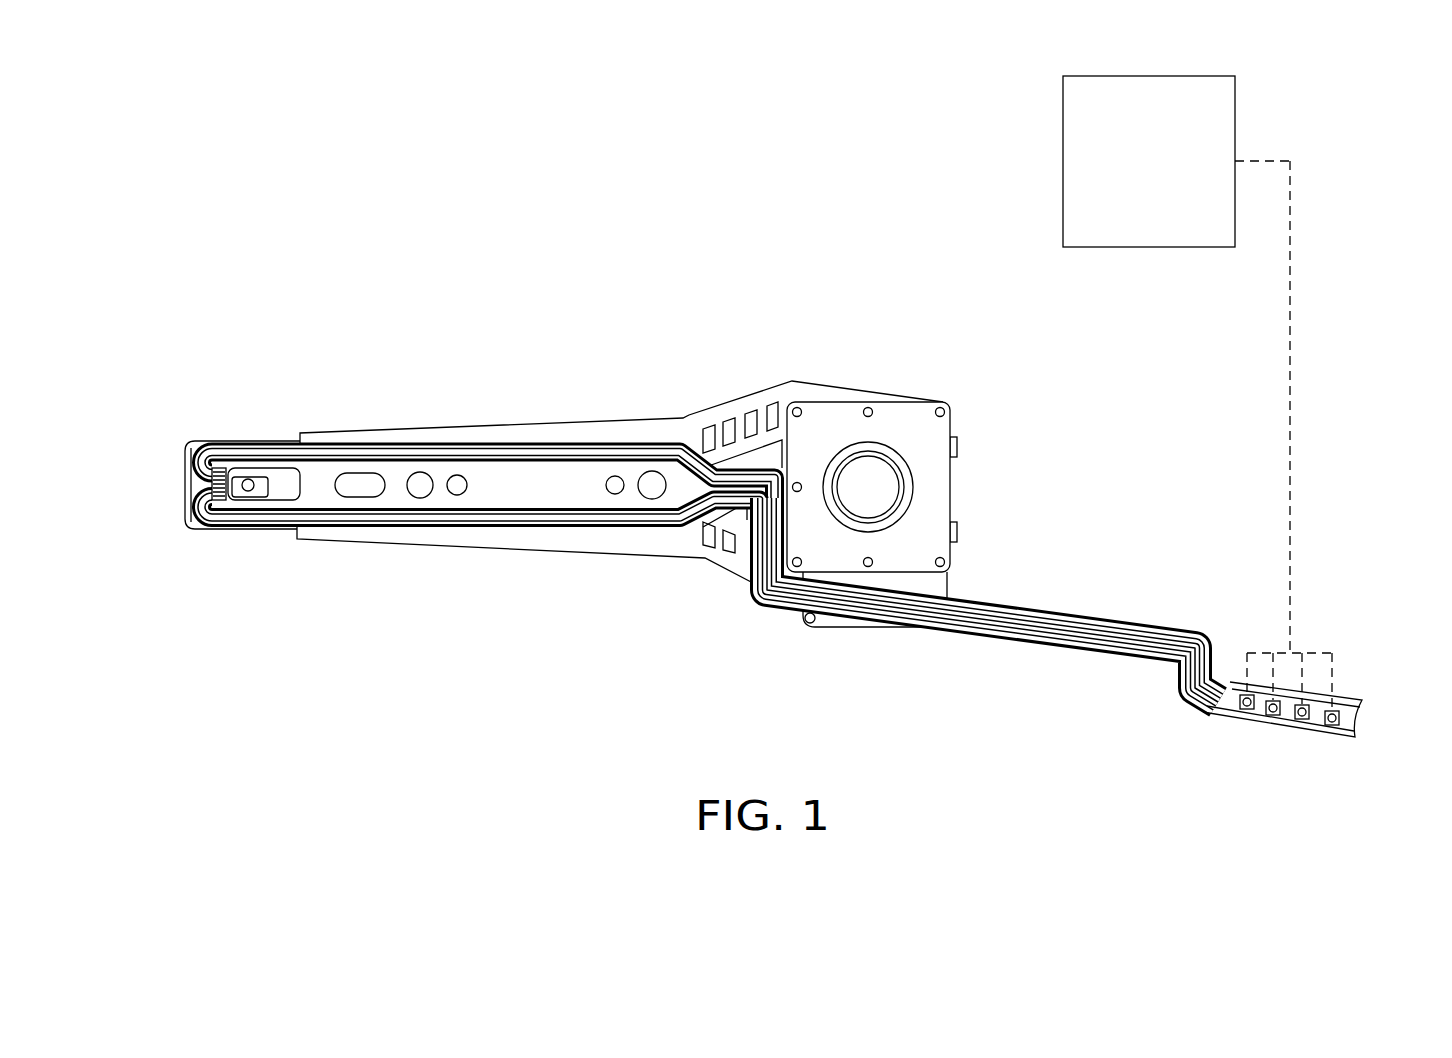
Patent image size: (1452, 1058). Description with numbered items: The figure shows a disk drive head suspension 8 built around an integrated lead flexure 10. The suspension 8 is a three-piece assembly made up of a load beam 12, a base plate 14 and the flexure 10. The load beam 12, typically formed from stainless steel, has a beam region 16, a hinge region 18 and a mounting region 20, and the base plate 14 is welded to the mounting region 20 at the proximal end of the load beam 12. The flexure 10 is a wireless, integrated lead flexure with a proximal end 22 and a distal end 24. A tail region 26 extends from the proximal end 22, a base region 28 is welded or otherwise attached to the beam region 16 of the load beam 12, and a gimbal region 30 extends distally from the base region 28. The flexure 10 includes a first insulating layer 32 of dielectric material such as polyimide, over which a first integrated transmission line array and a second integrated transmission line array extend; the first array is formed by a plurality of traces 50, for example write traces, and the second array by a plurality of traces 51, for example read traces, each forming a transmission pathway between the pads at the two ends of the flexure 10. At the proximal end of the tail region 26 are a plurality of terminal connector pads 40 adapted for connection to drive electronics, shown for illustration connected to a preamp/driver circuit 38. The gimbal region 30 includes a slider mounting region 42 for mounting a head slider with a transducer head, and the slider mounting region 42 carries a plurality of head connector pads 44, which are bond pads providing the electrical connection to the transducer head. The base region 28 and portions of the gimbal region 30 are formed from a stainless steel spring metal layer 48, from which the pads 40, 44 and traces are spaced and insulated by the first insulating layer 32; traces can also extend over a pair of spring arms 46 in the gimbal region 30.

The disk drive head suspension 8 is at (1022, 485).
The integrated lead flexure 10 is at (360, 537).
The load beam 12 is at (492, 552).
The base plate 14 is at (843, 428).
The beam region 16 is at (592, 417).
The hinge region 18 is at (722, 405).
The mounting region 20 is at (822, 383).
The proximal end 22 is at (1370, 713).
The distal end 24 is at (178, 460).
The tail region 26 is at (1152, 545).
The base region 28 is at (456, 472).
The gimbal region 30 is at (198, 440).
The first insulating layer 32 is at (1245, 715).
The preamp/driver circuit 38 is at (1243, 128).
The terminal connector pads 40 is at (1338, 690).
The slider mounting region 42 is at (247, 500).
The head connector pads 44 is at (212, 487).
The spring arms 46 is at (269, 530).
The spring metal layer 48 is at (877, 398).
The traces 50 is at (403, 522).
The traces 51 is at (413, 453).